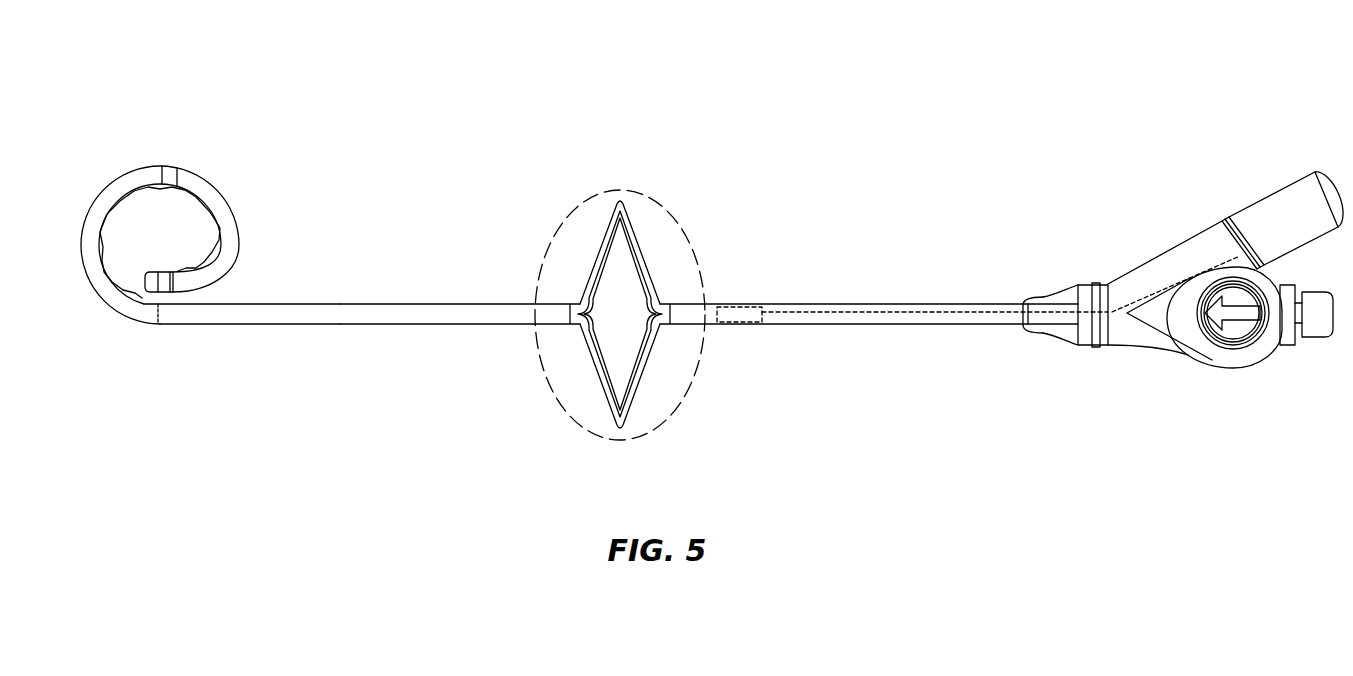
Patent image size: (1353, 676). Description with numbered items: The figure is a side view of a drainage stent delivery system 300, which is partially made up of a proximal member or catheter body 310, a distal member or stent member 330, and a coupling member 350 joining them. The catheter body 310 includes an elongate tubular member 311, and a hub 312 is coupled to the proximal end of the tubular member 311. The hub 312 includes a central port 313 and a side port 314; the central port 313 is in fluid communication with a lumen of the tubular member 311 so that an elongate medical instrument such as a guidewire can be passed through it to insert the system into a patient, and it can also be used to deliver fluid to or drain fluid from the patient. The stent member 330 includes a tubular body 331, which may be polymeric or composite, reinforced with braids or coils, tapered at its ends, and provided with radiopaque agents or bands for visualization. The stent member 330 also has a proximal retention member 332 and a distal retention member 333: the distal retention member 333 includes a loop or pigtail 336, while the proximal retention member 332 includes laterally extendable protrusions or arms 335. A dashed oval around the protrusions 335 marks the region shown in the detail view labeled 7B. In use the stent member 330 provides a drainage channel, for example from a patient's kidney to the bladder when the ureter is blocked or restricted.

The drainage stent delivery system 300 is at (1000, 147).
The catheter body 310 is at (987, 272).
The tubular member 311 is at (938, 326).
The hub 312 is at (1127, 340).
The central port 313 is at (1313, 338).
The side port 314 is at (1205, 232).
The stent member 330 is at (393, 342).
The tubular body 331 is at (264, 326).
The proximal retention member 332 is at (597, 228).
The distal retention member 333 is at (170, 163).
The protrusions 335 is at (645, 225).
The pigtail 336 is at (122, 187).
The coupling member 350 is at (748, 340).
The detail view reference 7B is at (673, 217).